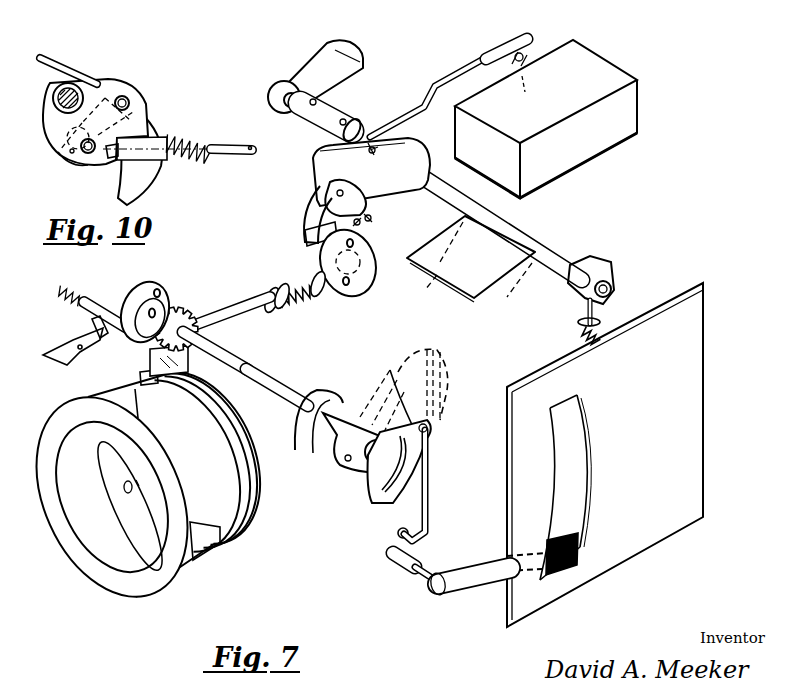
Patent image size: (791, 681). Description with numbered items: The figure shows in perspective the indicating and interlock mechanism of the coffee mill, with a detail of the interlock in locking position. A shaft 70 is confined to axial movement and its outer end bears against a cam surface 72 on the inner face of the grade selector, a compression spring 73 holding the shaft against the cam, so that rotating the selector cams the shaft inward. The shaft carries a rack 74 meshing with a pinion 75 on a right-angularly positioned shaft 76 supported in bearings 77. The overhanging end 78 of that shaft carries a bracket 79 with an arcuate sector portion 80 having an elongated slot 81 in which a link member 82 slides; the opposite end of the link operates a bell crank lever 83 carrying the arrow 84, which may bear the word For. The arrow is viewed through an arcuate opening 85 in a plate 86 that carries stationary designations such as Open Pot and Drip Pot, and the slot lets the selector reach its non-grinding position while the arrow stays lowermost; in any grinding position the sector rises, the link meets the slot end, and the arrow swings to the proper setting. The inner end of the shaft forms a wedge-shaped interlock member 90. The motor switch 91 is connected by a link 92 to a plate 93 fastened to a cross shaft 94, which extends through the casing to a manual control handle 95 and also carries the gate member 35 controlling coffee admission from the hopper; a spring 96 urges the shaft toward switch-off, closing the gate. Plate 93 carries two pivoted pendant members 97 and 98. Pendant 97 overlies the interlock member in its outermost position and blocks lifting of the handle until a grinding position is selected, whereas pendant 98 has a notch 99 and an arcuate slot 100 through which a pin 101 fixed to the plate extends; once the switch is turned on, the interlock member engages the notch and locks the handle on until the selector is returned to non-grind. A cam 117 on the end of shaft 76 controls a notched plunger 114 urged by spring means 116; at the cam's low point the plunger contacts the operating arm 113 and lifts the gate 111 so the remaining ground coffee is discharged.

In FIG. 7, the gate member 35 is at (432, 257).
In FIG. 7, the shaft 70 is at (243, 317).
In FIG. 7, the cam surface 72 is at (137, 376).
In FIG. 7, the compression spring 73 is at (278, 283).
In FIG. 7, the rack 74 is at (218, 352).
In FIG. 7, the pinion 75 is at (181, 305).
In FIG. 7, the shaft 76 is at (270, 385).
In FIG. 7, the bearings 77 is at (328, 398).
In FIG. 7, the overhanging end 78 is at (373, 460).
In FIG. 7, the bracket 79 is at (388, 370).
In FIG. 7, the sector portion 80 is at (380, 503).
In FIG. 7, the elongated slot 81 is at (397, 497).
In FIG. 7, the link member 82 is at (428, 502).
In FIG. 7, the bell crank lever 83 is at (396, 571).
In FIG. 7, the arrow 84 is at (470, 573).
In FIG. 7, the opening 85 is at (567, 413).
In FIG. 7, the plate 86 is at (678, 297).
In FIG. 10, the interlock member 90 is at (108, 160).
In FIG. 7, the interlock member 90 is at (300, 230).
In FIG. 7, the motor switch 91 is at (605, 70).
In FIG. 10, the link 92 is at (52, 59).
In FIG. 7, the link 92 is at (425, 107).
In FIG. 10, the plate 93 is at (110, 80).
In FIG. 7, the plate 93 is at (322, 162).
In FIG. 7, the cross shaft 94 is at (533, 243).
In FIG. 7, the manual control handle 95 is at (353, 45).
In FIG. 7, the spring 96 is at (580, 328).
In FIG. 10, the pendant member 97 is at (135, 193).
In FIG. 7, the pendant member 97 is at (315, 203).
In FIG. 10, the pendant member 98 is at (78, 170).
In FIG. 7, the pendant member 98 is at (350, 200).
In FIG. 7, the notch 99 is at (358, 263).
In FIG. 10, the arcuate slot 100 is at (71, 149).
In FIG. 7, the arcuate slot 100 is at (367, 223).
In FIG. 7, the pin 101 is at (380, 217).
In FIG. 7, the gate 111 is at (55, 360).
In FIG. 7, the operating arm 113 is at (88, 324).
In FIG. 7, the notched plunger 114 is at (93, 303).
In FIG. 7, the spring means 116 is at (58, 286).
In FIG. 7, the cam 117 is at (132, 300).